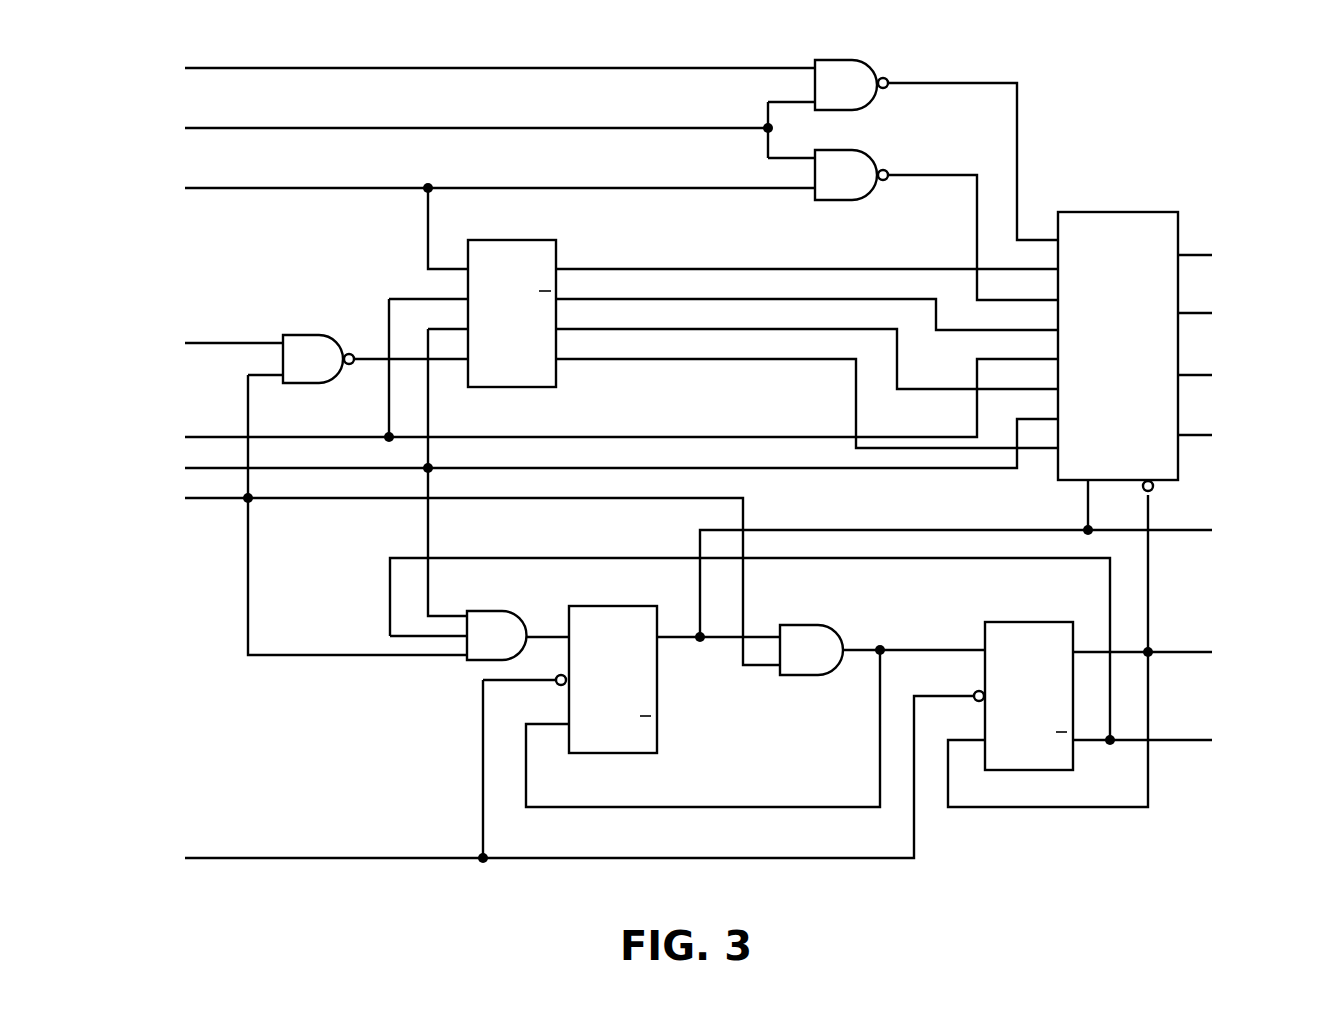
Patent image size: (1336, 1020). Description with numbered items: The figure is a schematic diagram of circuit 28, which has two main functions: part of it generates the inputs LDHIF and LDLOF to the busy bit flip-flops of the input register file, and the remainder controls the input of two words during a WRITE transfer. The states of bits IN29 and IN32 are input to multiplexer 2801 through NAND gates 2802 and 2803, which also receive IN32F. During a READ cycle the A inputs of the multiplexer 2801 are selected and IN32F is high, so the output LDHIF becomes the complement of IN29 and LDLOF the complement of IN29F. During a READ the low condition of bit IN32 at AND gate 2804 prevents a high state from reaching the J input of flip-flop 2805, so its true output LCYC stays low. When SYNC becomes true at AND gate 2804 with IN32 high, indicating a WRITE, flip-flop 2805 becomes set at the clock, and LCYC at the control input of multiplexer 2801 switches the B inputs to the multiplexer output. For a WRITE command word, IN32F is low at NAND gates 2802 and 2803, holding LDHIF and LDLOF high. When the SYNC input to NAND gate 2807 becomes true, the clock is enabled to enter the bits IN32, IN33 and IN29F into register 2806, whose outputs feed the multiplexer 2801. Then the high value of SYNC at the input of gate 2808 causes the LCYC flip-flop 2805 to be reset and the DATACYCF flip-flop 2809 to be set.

The circuit 28 is at (710, 487).
The multiplexer 2801 is at (1122, 212).
The NAND gate 2802 is at (878, 72).
The NAND gate 2803 is at (878, 164).
The AND gate 2804 is at (490, 611).
The flip-flop 2805 is at (657, 684).
The register 2806 is at (556, 257).
The NAND gate 2807 is at (320, 335).
The gate 2808 is at (818, 625).
The DATACYCF flip-flop 2809 is at (1026, 622).